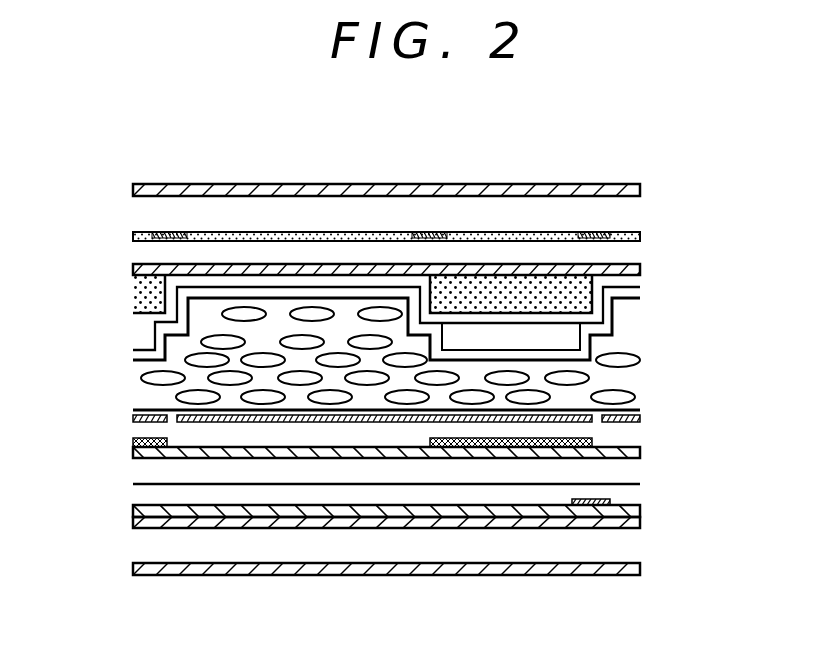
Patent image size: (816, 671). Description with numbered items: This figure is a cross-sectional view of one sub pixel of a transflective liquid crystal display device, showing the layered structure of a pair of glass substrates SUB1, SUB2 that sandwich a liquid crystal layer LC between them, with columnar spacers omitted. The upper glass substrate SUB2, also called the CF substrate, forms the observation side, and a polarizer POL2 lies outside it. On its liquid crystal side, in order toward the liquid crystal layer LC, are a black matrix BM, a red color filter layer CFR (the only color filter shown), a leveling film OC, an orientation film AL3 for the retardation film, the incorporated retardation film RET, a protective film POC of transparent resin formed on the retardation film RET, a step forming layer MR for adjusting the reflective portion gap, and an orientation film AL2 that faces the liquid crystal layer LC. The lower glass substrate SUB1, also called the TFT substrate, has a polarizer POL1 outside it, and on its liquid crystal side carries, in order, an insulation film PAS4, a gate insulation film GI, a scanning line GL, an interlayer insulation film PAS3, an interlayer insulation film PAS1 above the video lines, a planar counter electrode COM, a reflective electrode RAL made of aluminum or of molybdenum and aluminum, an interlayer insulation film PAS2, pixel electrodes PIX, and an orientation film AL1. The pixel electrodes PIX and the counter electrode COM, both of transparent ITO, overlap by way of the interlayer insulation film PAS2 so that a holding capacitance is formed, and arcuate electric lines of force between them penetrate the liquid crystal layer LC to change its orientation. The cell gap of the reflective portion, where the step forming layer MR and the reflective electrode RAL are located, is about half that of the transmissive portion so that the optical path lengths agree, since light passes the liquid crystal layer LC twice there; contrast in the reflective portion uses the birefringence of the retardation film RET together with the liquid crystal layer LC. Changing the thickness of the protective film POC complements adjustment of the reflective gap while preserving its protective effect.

The polarizer POL2 is at (633, 192).
The glass substrate SUB2 is at (632, 215).
The red color filter layer CFR is at (633, 237).
The black matrix BM is at (170, 232).
The leveling film OC is at (138, 253).
The orientation film AL3 is at (133, 272).
The protective film POC is at (140, 322).
The incorporated retardation film RET is at (514, 297).
The orientation film AL2 is at (632, 292).
The step forming layer MR is at (572, 333).
The liquid crystal layer LC is at (142, 387).
The orientation film AL1 is at (643, 413).
The pixel electrode PIX is at (133, 418).
The interlayer insulation film PAS2 is at (633, 433).
The counter electrode COM is at (133, 452).
The interlayer insulation film PAS1 is at (145, 473).
The interlayer insulation film PAS3 is at (635, 497).
The gate insulation film GI is at (633, 513).
The insulation film PAS4 is at (140, 520).
The scanning line GL is at (587, 512).
The reflective electrode RAL is at (450, 448).
The glass substrate SUB1 is at (633, 547).
The polarizer POL1 is at (633, 568).